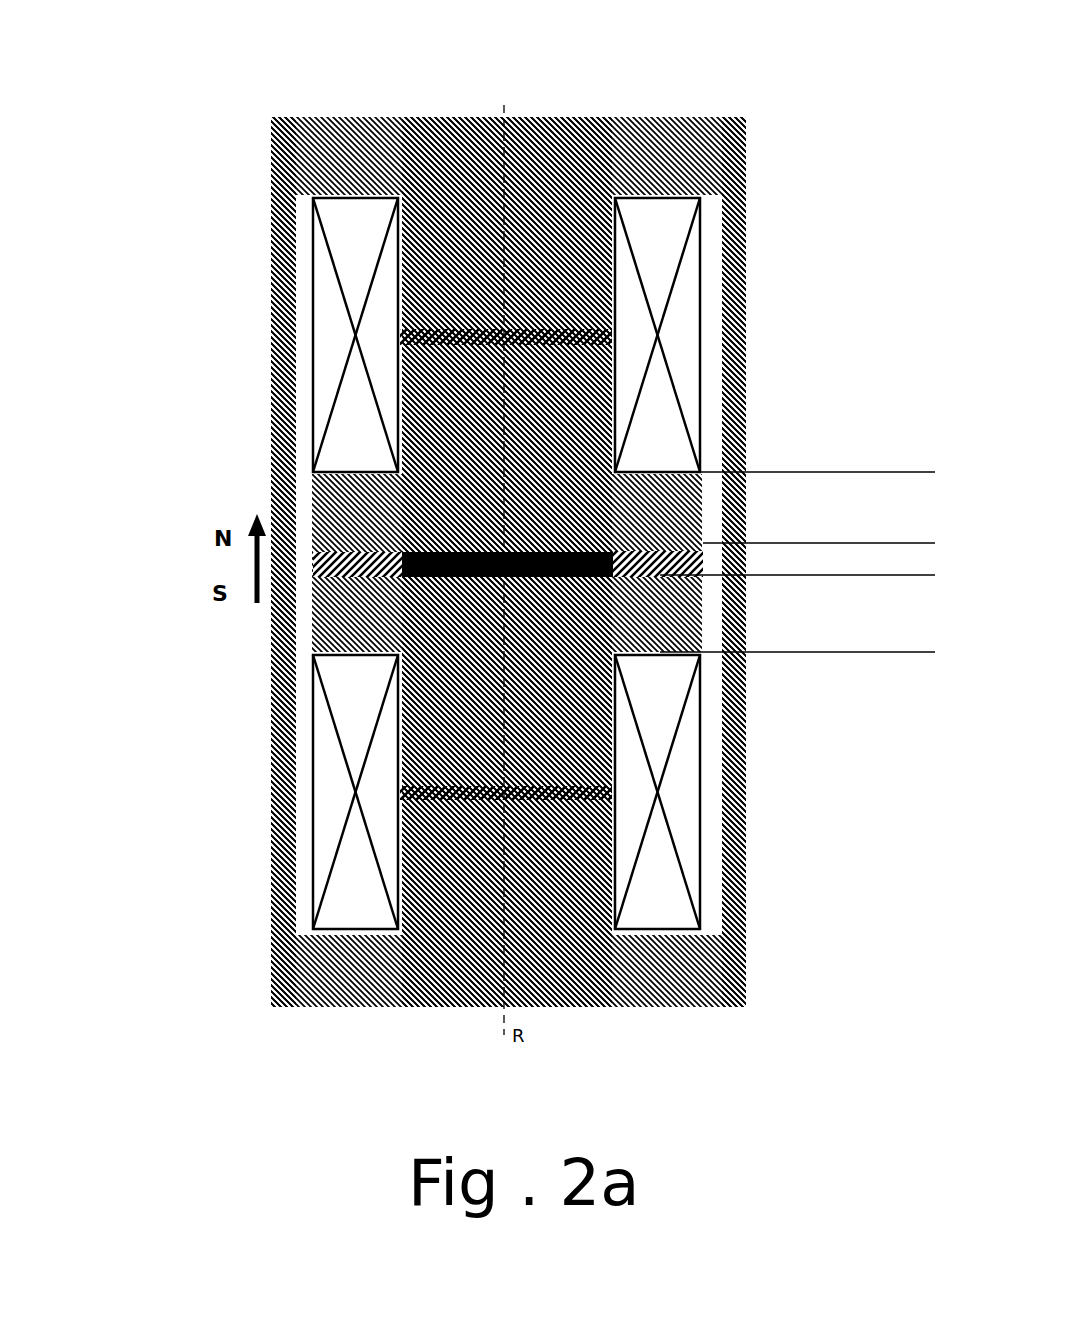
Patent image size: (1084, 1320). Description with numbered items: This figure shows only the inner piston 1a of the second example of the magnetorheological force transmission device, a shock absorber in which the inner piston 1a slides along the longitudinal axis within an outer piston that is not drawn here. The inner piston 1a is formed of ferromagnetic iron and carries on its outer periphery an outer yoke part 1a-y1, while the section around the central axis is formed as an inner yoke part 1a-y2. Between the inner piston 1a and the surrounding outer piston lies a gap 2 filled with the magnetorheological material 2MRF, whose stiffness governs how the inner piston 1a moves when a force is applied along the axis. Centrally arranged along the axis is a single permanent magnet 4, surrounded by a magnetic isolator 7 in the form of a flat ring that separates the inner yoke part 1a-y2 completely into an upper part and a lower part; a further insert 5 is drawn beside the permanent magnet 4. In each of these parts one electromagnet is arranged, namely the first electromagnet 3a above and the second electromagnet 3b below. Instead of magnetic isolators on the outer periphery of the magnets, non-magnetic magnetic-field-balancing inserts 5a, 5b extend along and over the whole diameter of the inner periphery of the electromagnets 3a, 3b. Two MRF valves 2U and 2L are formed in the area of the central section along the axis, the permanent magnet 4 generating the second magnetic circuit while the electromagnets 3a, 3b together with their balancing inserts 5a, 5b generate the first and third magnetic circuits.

The first piston element 1a is at (676, 146).
The outer yoke part 1a-y1 is at (735, 258).
The inner yoke part 1a-y2 is at (582, 410).
The gap / slot 2 is at (300, 212).
The MRF valve 2U is at (797, 507).
The MRF valve 2L is at (797, 613).
The magnetorheological material 2MRF is at (305, 340).
The electromagnet 3a is at (325, 285).
The electromagnet 3b is at (683, 768).
The permanent magnet 4 is at (572, 548).
The spacer element 5 is at (658, 548).
The magnetic-field-balancing insert 5a is at (478, 334).
The magnetic-field-balancing insert 5b is at (530, 792).
The magnetic isolator 7 is at (372, 553).